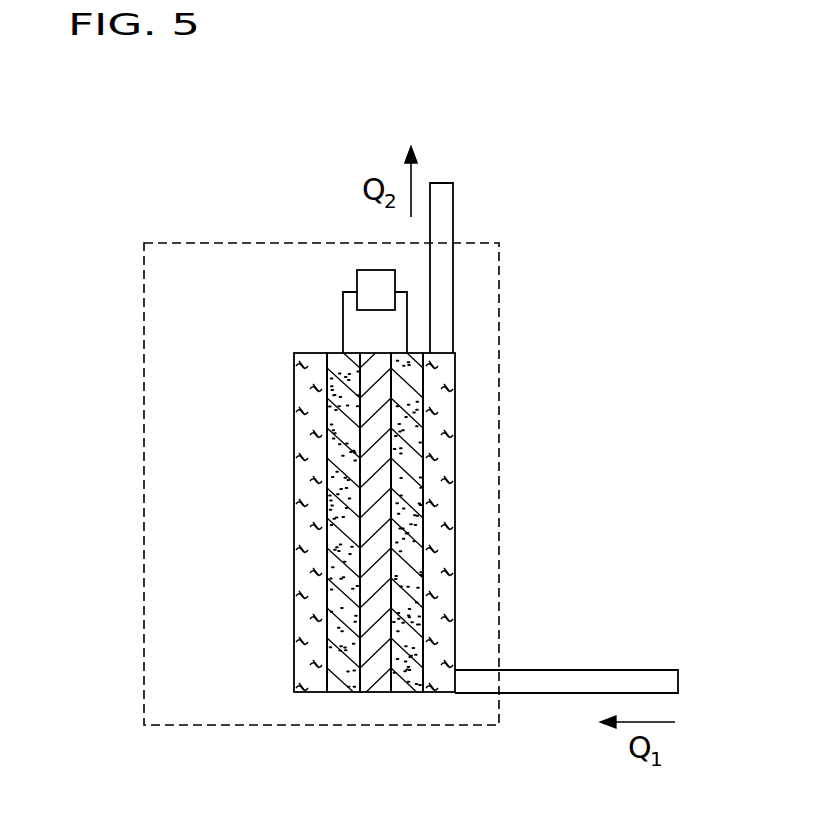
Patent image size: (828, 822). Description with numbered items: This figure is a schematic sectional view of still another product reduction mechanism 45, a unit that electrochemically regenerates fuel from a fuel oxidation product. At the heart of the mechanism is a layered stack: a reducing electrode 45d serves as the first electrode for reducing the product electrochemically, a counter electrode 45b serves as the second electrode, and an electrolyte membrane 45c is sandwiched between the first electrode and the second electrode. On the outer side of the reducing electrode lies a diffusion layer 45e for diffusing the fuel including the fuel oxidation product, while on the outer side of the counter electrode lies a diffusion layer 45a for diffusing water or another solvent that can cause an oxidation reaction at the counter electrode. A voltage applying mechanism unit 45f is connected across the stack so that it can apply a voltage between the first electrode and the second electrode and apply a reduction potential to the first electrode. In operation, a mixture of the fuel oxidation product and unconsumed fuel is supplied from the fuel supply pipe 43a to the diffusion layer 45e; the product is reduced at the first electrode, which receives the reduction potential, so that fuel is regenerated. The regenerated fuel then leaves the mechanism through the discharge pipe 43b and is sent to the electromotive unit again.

The product reduction mechanism 45 is at (143, 410).
The diffusion layer 45a is at (296, 608).
The counter electrode 45b is at (340, 692).
The electrolyte membrane 45c is at (378, 692).
The reducing electrode 45d is at (415, 692).
The diffusion layer 45e is at (445, 447).
The voltage applying mechanism unit 45f is at (364, 276).
The fuel supply pipe 43a is at (620, 680).
The discharge pipe 43b is at (444, 210).